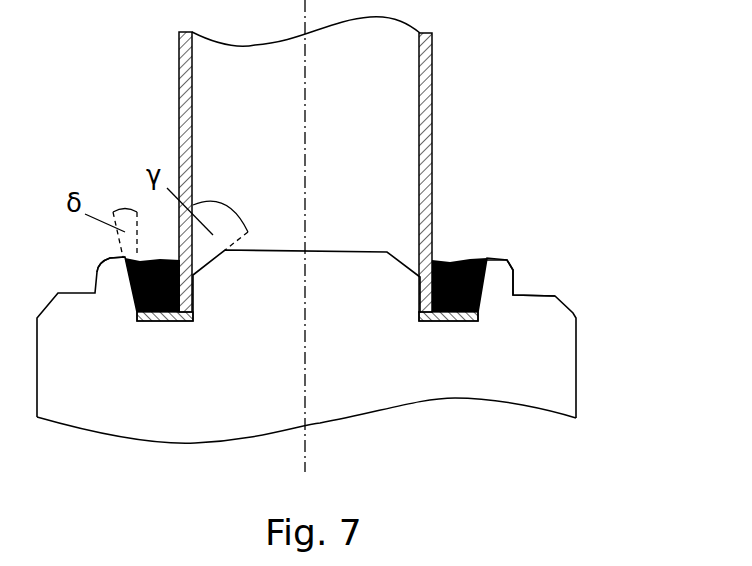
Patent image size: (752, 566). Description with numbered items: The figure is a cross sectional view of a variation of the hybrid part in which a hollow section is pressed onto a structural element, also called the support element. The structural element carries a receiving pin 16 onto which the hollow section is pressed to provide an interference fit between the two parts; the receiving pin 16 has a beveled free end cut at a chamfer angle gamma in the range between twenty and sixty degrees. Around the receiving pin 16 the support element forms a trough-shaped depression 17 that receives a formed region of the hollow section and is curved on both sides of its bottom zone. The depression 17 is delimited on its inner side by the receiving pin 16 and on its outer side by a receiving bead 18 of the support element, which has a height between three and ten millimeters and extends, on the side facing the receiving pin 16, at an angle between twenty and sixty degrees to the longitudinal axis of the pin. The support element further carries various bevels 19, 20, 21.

The receiving pin 16 is at (223, 287).
The depression 17 is at (450, 322).
The receiving bead 18 is at (115, 283).
The bevel 19 is at (566, 307).
The bevel 20 is at (513, 268).
The bevel 21 is at (403, 262).